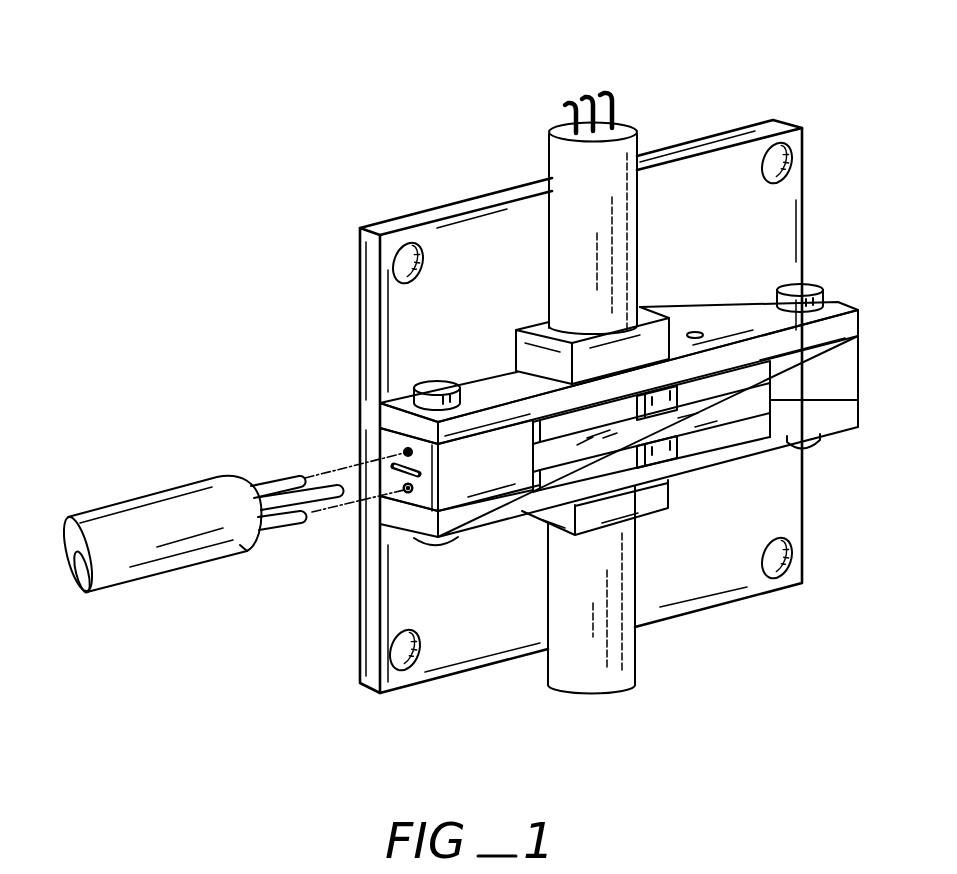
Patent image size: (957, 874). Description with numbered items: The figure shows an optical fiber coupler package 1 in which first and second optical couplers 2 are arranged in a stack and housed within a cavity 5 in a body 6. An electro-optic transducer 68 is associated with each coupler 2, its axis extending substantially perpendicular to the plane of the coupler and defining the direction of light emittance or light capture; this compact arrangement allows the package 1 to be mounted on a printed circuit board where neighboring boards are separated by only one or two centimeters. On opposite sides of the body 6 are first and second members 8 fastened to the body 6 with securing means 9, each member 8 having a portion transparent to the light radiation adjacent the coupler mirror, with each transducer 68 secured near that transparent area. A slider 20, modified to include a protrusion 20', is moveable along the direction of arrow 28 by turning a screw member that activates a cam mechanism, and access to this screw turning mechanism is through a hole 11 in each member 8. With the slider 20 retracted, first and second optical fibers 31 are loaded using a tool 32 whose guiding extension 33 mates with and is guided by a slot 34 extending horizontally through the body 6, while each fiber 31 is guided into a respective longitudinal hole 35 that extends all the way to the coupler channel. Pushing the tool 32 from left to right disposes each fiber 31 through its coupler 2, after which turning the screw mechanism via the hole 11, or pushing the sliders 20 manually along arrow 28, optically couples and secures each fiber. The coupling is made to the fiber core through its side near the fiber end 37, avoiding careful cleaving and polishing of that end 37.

The optical fiber coupler package 1 is at (154, 163).
The optical coupler 2 is at (717, 396).
The cavity 5 is at (768, 397).
The body 6 is at (504, 468).
The member 8 is at (475, 511).
The securing means 9 is at (437, 384).
The hole 11 is at (697, 333).
The slider 20 is at (651, 253).
The protrusion 20' is at (651, 585).
The arrow 28 is at (810, 493).
The optical fiber 31 is at (275, 480).
The tool 32 is at (126, 486).
The guiding extension 33 is at (327, 478).
The slot 34 is at (393, 466).
The longitudinal hole 35 is at (408, 493).
The fiber end 37 is at (317, 516).
The electro-optic transducer 68 is at (583, 182).